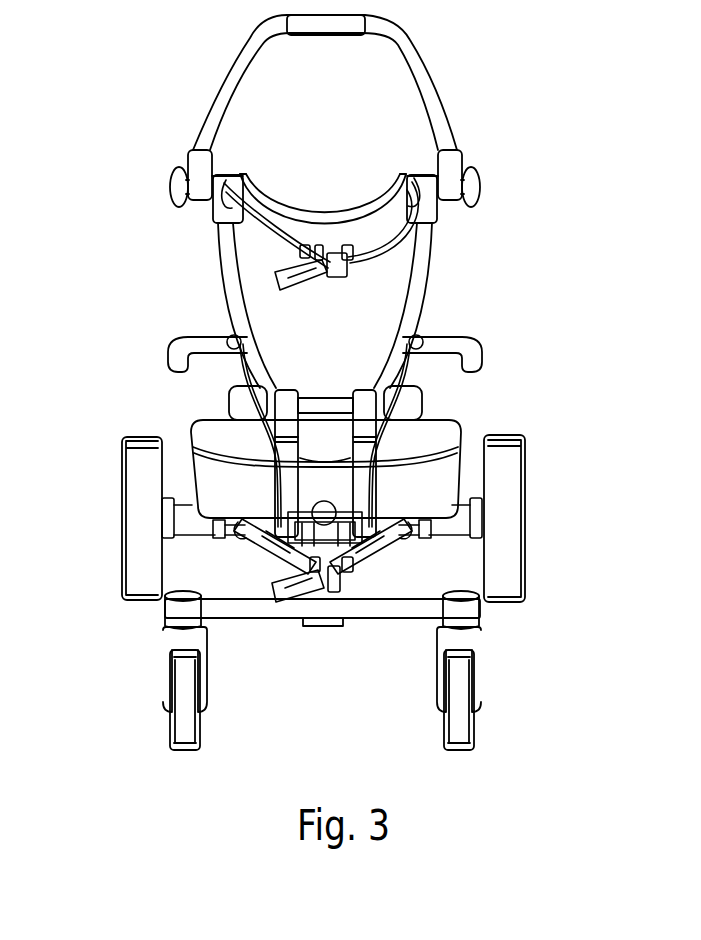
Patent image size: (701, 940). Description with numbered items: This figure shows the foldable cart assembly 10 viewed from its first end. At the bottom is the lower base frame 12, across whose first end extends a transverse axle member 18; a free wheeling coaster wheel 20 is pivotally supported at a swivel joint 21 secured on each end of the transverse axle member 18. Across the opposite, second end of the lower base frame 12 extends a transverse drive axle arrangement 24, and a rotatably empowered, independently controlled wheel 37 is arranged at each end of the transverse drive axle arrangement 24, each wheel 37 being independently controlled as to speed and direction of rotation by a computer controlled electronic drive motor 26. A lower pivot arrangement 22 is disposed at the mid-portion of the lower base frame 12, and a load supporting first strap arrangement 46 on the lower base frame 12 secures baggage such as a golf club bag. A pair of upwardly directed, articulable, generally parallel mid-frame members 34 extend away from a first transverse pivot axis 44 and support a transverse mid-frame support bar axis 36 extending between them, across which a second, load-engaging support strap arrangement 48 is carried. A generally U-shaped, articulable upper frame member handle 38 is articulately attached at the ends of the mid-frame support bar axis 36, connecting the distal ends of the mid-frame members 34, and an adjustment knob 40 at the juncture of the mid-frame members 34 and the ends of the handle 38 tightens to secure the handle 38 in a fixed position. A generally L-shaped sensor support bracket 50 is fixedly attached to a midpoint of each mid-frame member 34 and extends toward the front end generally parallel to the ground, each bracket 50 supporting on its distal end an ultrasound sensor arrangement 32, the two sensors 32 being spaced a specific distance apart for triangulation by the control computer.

The foldable cart assembly 10 is at (578, 291).
The lower base frame 12 is at (363, 487).
The transverse axle member 18 is at (388, 612).
The free wheeling coaster wheel 20 is at (170, 737).
The swivel joint 21 is at (170, 616).
The lower pivot arrangement 22 is at (318, 488).
The transverse drive axle arrangement 24 is at (232, 533).
The electronic drive motor 26 is at (193, 530).
The ultrasound sensor arrangement 32 is at (172, 369).
The mid-frame members 34 is at (223, 270).
The transverse mid-frame support bar axis 36 is at (310, 207).
The independently controlled wheel 37 is at (122, 514).
The upper frame member handle 38 is at (227, 75).
The adjustment knob 40 is at (171, 187).
The first transverse pivot axis 44 is at (322, 403).
The first strap arrangement 46 is at (385, 568).
The second support strap arrangement 48 is at (344, 274).
The L-shaped sensor support bracket 50 is at (200, 357).